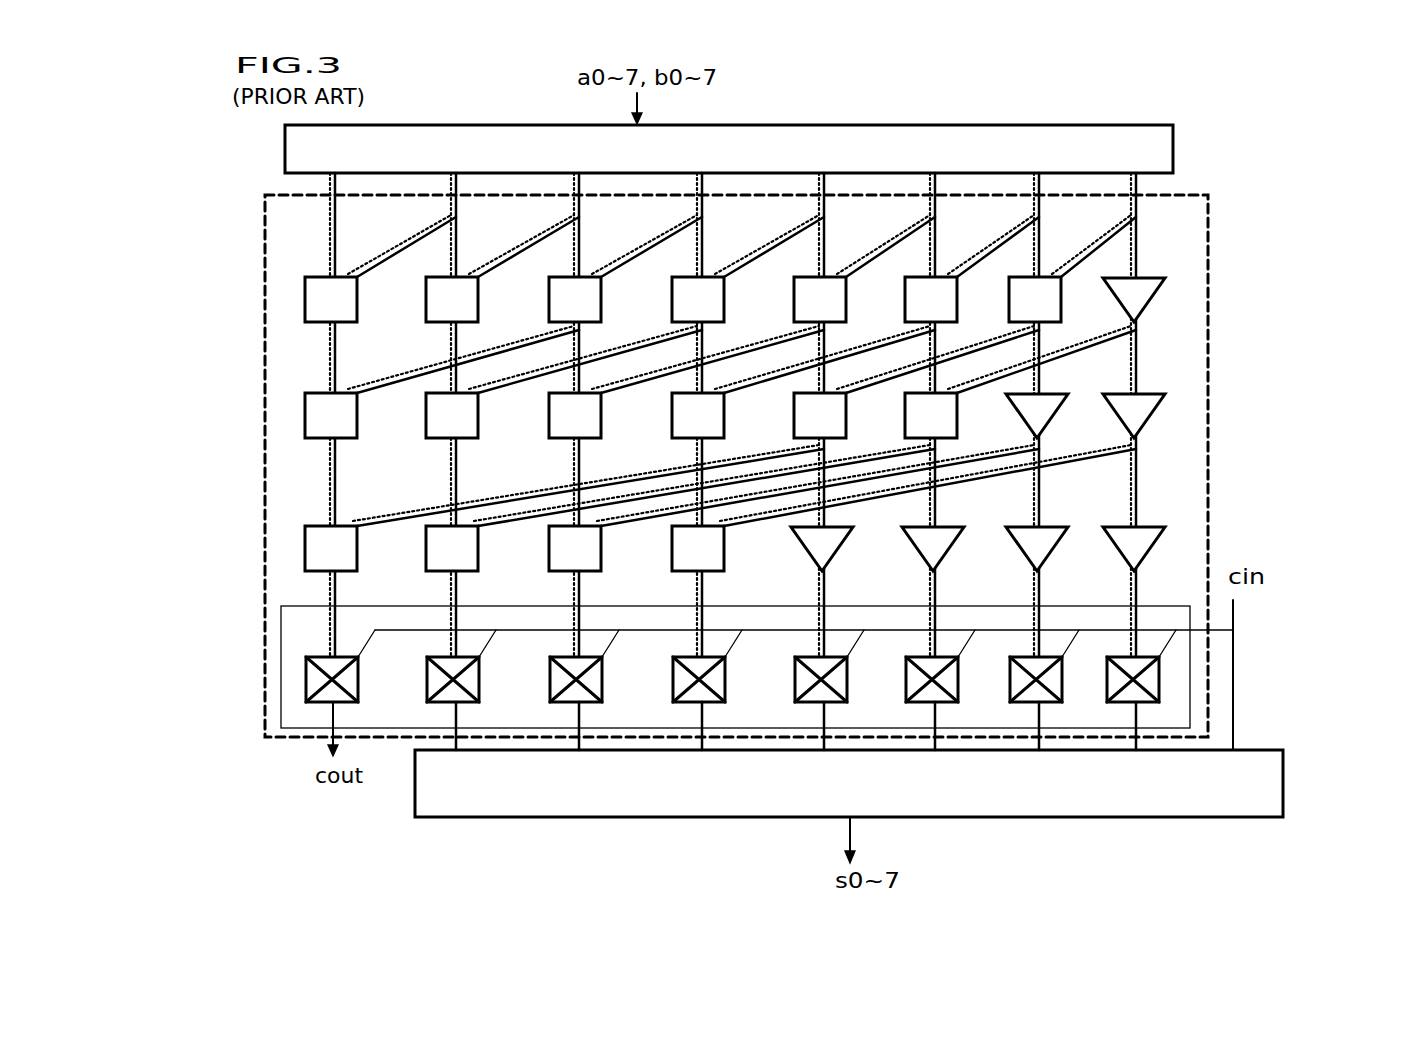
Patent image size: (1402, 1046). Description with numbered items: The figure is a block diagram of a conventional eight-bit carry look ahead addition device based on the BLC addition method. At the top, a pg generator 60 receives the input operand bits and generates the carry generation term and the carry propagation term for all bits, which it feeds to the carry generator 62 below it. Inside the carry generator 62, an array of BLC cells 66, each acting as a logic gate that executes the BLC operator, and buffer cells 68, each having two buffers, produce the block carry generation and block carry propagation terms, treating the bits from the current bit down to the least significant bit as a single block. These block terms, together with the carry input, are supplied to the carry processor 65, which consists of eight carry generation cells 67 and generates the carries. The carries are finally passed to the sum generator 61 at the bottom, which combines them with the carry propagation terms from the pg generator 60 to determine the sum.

The pg generator 60 is at (848, 123).
The sum generator 61 is at (1255, 749).
The carry generator 62 is at (1195, 193).
The carry processor 65 is at (714, 657).
The BLC cell 66 is at (305, 536).
The carry generation cell 67 is at (306, 685).
The buffer cell 68 is at (1163, 537).